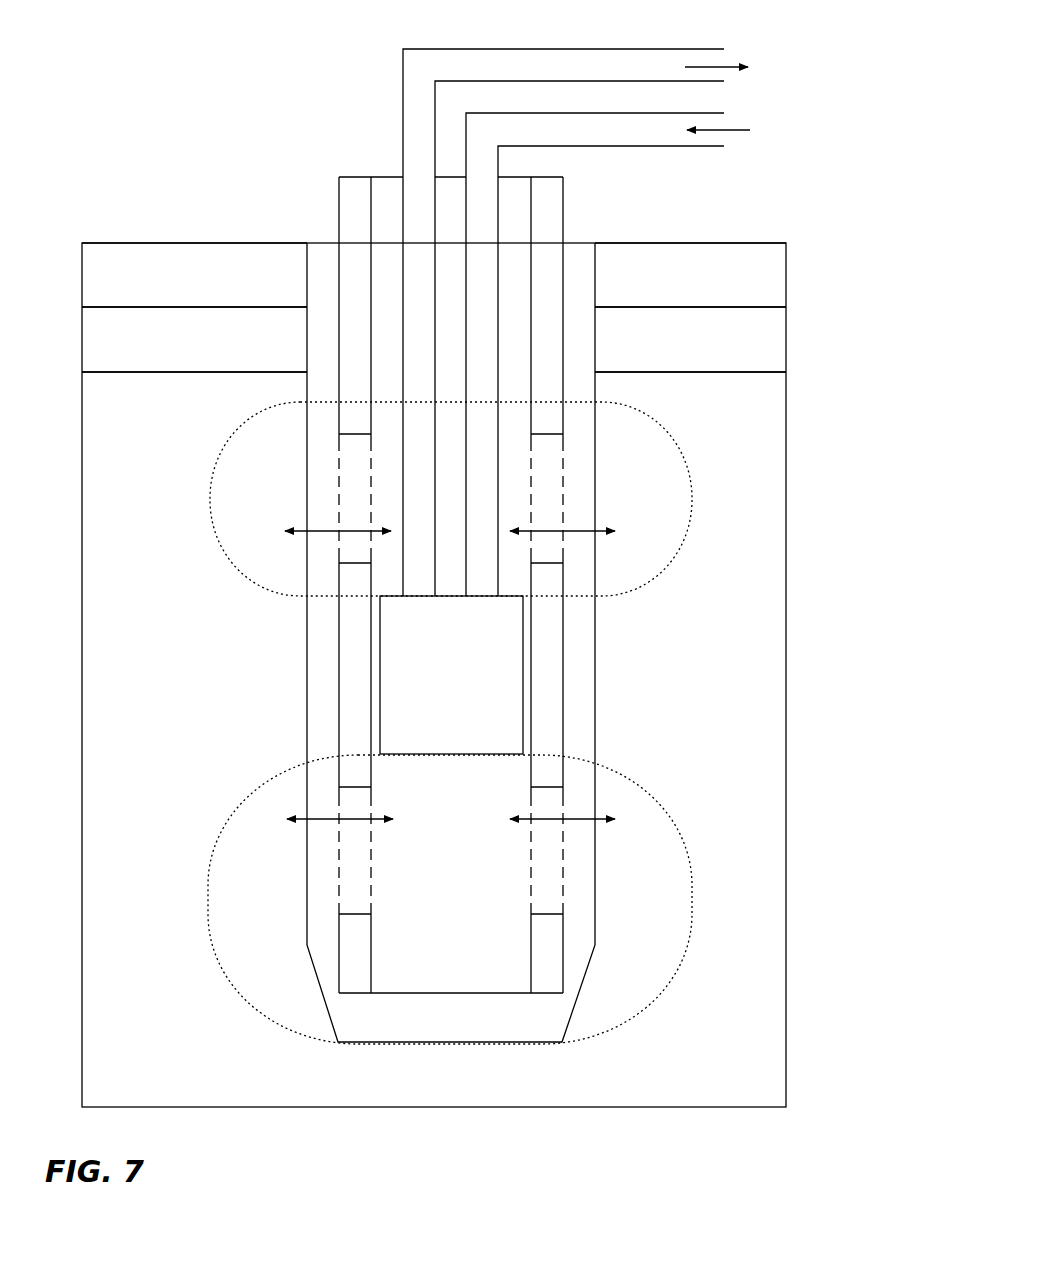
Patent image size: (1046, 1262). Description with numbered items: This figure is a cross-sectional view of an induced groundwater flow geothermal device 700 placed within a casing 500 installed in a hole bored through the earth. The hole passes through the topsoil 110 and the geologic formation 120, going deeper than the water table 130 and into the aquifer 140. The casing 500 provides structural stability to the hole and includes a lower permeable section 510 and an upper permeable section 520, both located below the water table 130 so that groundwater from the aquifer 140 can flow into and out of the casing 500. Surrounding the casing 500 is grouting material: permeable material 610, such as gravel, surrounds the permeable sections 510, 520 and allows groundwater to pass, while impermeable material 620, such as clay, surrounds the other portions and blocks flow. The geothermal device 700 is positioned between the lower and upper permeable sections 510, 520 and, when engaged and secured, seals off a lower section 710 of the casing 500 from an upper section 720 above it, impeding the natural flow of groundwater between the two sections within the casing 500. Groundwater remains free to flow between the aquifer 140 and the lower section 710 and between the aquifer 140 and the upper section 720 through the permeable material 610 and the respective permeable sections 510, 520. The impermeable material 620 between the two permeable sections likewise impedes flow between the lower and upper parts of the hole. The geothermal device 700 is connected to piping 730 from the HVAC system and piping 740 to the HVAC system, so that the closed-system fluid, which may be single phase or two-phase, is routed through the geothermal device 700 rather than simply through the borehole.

The topsoil 110 is at (753, 273).
The geologic formation 120 is at (752, 338).
The water table 130 is at (789, 364).
The aquifer 140 is at (755, 468).
The casing 500 is at (357, 177).
The lower permeable section 510 is at (362, 868).
The upper permeable section 520 is at (352, 483).
The permeable material 610 is at (320, 440).
The impermeable material 620 is at (334, 266).
The induced groundwater flow geothermal device 700 is at (451, 675).
The lower section 710 is at (667, 985).
The upper section 720 is at (687, 538).
The piping from the HVAC system 730 is at (710, 150).
The piping to the HVAC system 740 is at (670, 49).